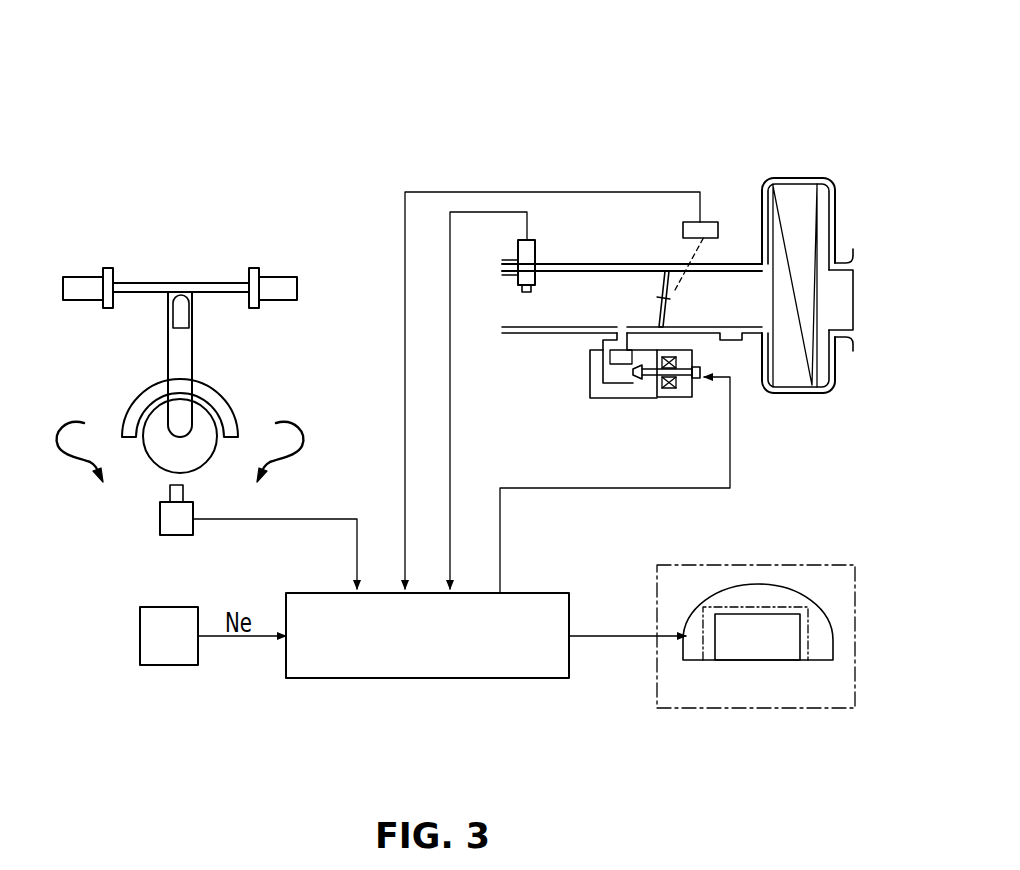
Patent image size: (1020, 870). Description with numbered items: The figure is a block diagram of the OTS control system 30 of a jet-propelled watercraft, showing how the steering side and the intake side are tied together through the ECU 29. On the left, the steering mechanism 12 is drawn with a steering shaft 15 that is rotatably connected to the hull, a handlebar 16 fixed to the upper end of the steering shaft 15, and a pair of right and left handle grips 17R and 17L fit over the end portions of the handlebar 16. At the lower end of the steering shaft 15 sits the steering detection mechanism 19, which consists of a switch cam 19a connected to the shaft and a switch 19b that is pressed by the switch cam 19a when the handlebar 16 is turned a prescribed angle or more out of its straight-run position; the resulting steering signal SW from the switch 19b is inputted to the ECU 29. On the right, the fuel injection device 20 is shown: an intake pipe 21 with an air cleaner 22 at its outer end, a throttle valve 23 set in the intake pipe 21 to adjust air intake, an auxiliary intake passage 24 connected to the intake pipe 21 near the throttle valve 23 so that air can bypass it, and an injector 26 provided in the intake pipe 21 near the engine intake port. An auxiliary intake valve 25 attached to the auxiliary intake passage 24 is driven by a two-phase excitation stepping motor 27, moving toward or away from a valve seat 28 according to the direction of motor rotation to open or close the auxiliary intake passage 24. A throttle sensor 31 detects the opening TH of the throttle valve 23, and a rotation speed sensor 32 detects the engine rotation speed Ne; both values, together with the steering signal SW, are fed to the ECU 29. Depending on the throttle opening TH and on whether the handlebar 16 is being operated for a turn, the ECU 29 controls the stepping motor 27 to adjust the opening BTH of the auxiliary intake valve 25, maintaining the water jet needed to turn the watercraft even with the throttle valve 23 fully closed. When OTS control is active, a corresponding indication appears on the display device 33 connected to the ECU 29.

The steering mechanism 12 is at (195, 241).
The steering shaft 15 is at (196, 342).
The handlebar 16 is at (127, 283).
The left handle grip 17L is at (82, 278).
The right handle grip 17R is at (278, 278).
The steering detection mechanism 19 is at (68, 495).
The switch cam 19a is at (134, 438).
The switch 19b is at (158, 519).
The fuel injection device 20 is at (852, 90).
The intake pipe 21 is at (570, 263).
The air cleaner 22 is at (836, 216).
The throttle valve 23 is at (658, 272).
The auxiliary intake passage 24 is at (598, 347).
The auxiliary intake valve 25 is at (646, 396).
The injector 26 is at (517, 278).
The stepping motor 27 is at (684, 400).
The valve seat 28 is at (630, 397).
The ECU 29 is at (522, 669).
The OTS control system 30 is at (90, 138).
The throttle sensor 31 is at (718, 230).
The rotation speed sensor 32 is at (165, 667).
The display device 33 is at (810, 710).